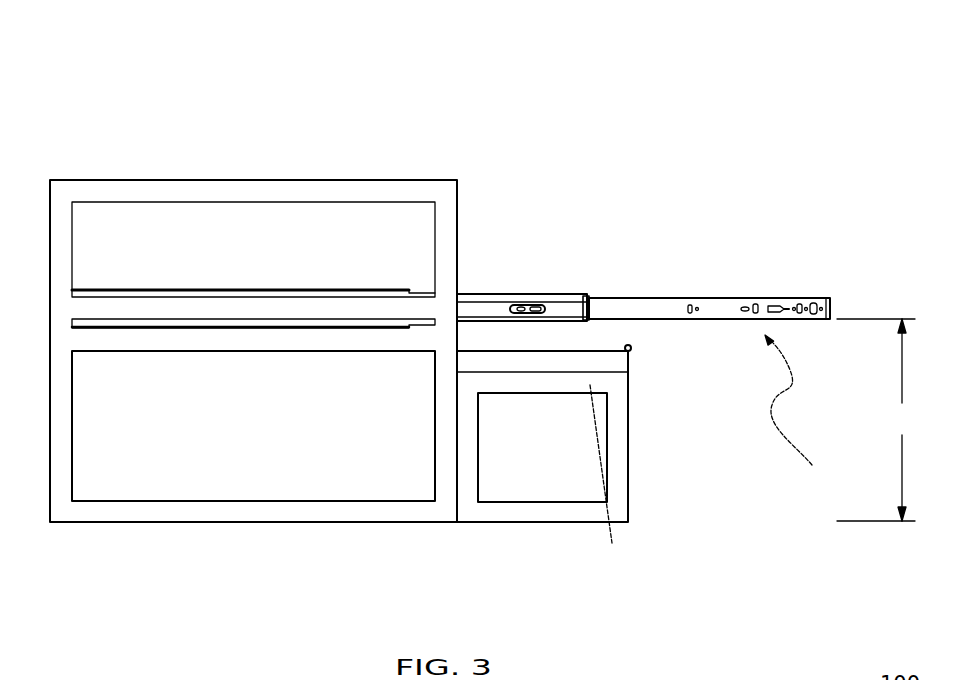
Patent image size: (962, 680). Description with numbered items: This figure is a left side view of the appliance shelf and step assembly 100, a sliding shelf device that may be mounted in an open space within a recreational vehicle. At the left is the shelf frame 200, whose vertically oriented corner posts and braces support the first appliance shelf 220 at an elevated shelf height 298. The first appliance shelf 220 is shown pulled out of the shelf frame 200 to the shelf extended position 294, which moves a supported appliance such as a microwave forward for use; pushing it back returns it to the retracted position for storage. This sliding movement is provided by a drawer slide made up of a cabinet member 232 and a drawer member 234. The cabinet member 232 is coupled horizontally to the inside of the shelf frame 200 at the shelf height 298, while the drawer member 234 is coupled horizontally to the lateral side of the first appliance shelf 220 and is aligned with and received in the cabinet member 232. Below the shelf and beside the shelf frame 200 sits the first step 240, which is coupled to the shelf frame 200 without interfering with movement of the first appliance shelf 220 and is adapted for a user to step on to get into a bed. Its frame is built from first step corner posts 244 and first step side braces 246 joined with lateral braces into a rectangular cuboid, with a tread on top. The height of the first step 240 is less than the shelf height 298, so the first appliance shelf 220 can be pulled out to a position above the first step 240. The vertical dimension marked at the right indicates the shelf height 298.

The appliance shelf and step assembly 100 is at (818, 178).
The shelf frame 200 is at (188, 179).
The first appliance shelf 220 is at (830, 297).
The cabinet member 232 is at (495, 298).
The drawer member 234 is at (662, 297).
The first step 240 is at (481, 512).
The first step corner posts 244 is at (468, 440).
The first step side braces 246 is at (570, 512).
The shelf extended position 294 is at (811, 413).
The shelf height 298 is at (880, 420).